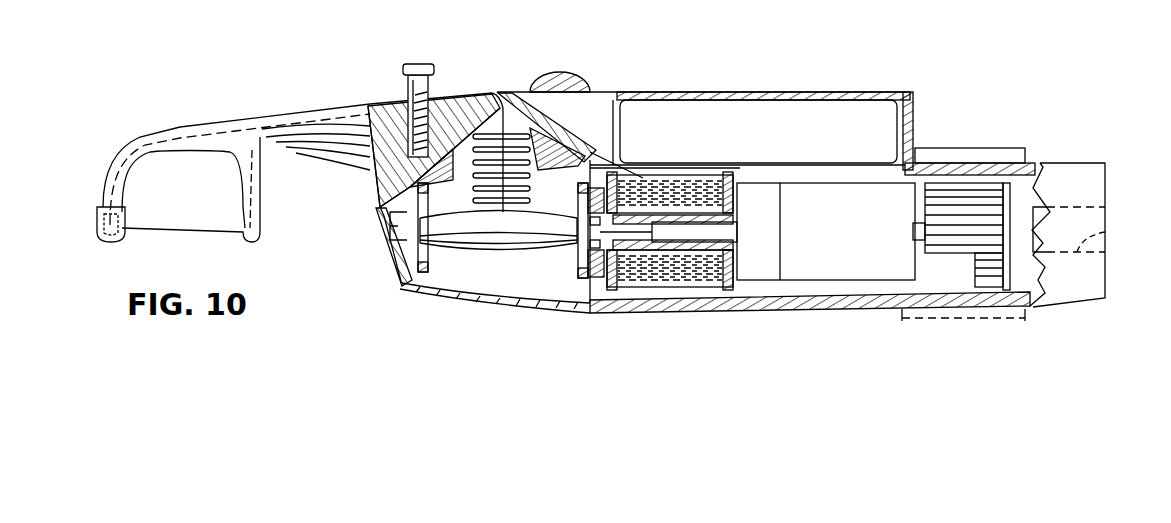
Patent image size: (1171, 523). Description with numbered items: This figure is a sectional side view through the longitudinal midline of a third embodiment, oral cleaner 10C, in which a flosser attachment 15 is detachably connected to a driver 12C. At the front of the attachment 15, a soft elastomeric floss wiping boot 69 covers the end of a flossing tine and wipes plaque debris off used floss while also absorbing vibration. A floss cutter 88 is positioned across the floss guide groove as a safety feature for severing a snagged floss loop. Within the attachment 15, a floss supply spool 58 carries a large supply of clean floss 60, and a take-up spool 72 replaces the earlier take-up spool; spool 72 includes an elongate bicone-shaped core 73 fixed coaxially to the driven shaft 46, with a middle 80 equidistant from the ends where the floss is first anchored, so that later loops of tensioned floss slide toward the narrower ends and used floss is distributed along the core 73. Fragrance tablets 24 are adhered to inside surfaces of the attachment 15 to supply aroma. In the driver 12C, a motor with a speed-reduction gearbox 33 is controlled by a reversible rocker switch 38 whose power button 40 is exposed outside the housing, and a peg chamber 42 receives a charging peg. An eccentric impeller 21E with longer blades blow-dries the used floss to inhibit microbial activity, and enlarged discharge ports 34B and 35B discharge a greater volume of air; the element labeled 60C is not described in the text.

The oral cleaner 10C is at (1088, 127).
The driver 12C is at (688, 81).
The flosser attachment 15 is at (371, 271).
The eccentric impeller 21E is at (1013, 200).
The fragrance tablets 24 is at (463, 172).
The speed-reduction gearbox 33 is at (782, 215).
The discharge port 34B is at (972, 148).
The discharge port 35B is at (968, 318).
The rocker switch 38 is at (607, 120).
The power button 40 is at (565, 75).
The peg chamber 42 is at (1105, 232).
The driven shaft 46 is at (590, 231).
The floss supply spool 58 is at (722, 178).
The clean floss 60 is at (686, 290).
The hatched block 60C is at (393, 100).
The floss wiping boot 69 is at (100, 234).
The take-up spool 72 is at (424, 250).
The bicone-shaped core 73 is at (500, 244).
The middle 80 is at (512, 246).
The floss cutter 88 is at (428, 68).